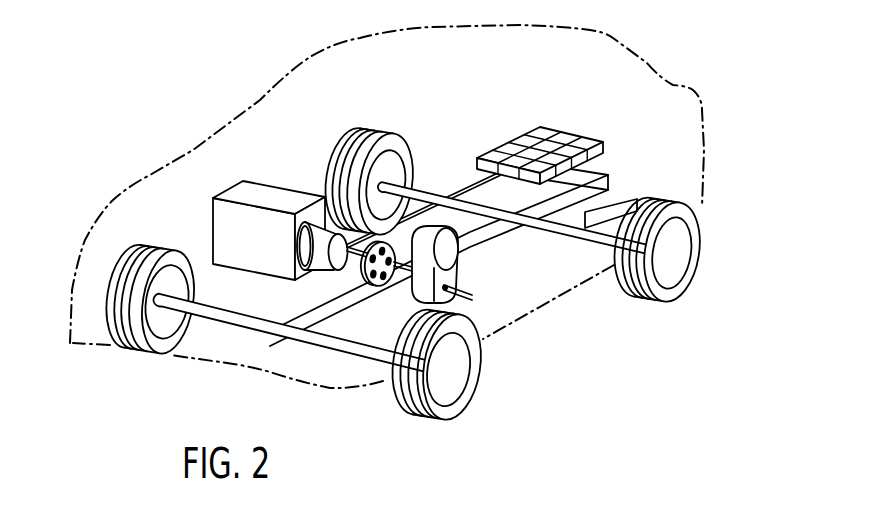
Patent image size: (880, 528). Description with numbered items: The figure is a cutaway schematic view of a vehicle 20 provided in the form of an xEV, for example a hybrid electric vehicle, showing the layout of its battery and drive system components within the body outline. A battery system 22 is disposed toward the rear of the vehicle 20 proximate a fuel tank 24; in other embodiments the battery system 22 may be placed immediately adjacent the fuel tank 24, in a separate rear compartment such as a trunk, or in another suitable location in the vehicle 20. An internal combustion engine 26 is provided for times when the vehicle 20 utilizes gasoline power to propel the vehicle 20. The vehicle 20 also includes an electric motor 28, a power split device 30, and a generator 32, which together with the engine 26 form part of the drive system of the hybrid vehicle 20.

The vehicle 20 is at (590, 29).
The battery system 22 is at (561, 116).
The fuel tank 24 is at (624, 189).
The internal combustion engine 26 is at (242, 192).
The electric motor 28 is at (328, 234).
The power split device 30 is at (362, 277).
The generator 32 is at (460, 283).